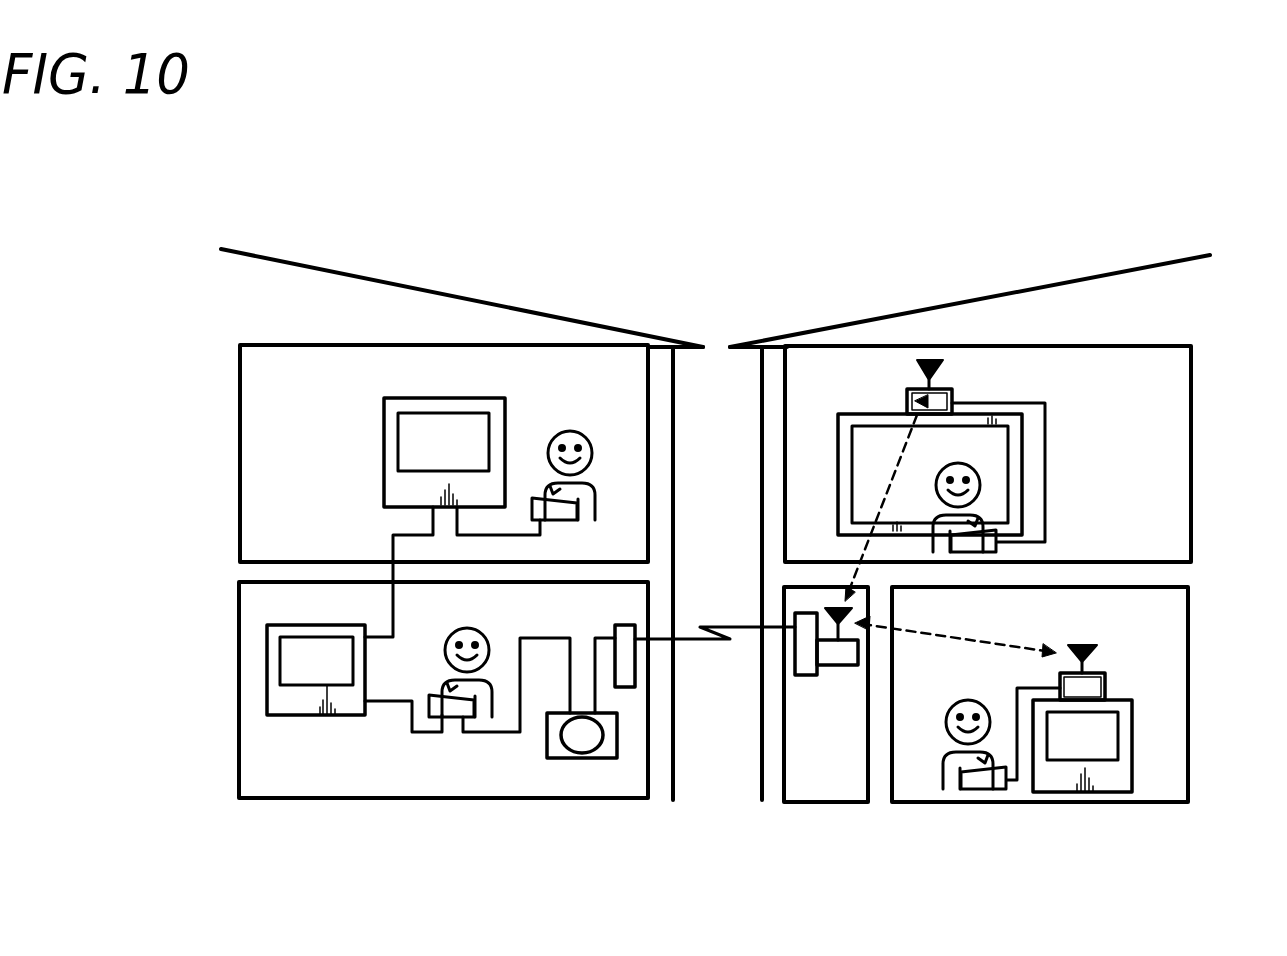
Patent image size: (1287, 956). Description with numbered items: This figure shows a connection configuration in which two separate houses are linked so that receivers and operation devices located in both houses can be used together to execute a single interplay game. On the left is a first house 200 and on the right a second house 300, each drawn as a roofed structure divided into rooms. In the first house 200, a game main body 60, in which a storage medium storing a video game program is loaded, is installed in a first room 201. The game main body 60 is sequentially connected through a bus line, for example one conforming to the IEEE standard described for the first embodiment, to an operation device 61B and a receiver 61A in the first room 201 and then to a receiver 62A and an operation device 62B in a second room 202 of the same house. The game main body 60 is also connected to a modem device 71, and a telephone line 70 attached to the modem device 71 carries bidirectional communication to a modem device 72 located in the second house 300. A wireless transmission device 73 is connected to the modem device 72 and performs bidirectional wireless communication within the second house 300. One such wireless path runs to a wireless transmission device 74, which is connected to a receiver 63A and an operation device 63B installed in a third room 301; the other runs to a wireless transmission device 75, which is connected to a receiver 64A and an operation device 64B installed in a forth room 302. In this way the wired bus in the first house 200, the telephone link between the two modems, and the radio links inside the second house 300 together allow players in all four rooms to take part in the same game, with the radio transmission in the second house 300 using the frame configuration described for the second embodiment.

The first house 200 is at (575, 277).
The second house 300 is at (915, 312).
The first room 201 is at (239, 685).
The second room 202 is at (239, 447).
The third room 301 is at (1188, 673).
The forth room 302 is at (1192, 457).
The game main body 60 is at (568, 757).
The receiver 61A is at (300, 717).
The operation device 61B is at (432, 696).
The receiver 62A is at (384, 440).
The operation device 62B is at (572, 522).
The receiver 63A is at (1132, 728).
The operation device 63B is at (980, 793).
The receiver 64A is at (850, 413).
The operation device 64B is at (997, 545).
The telephone line 70 is at (712, 624).
The modem device 71 is at (616, 626).
The modem device 72 is at (803, 677).
The wireless transmission device 73 is at (841, 667).
The wireless transmission device 74 is at (1098, 652).
The wireless transmission device 75 is at (945, 365).